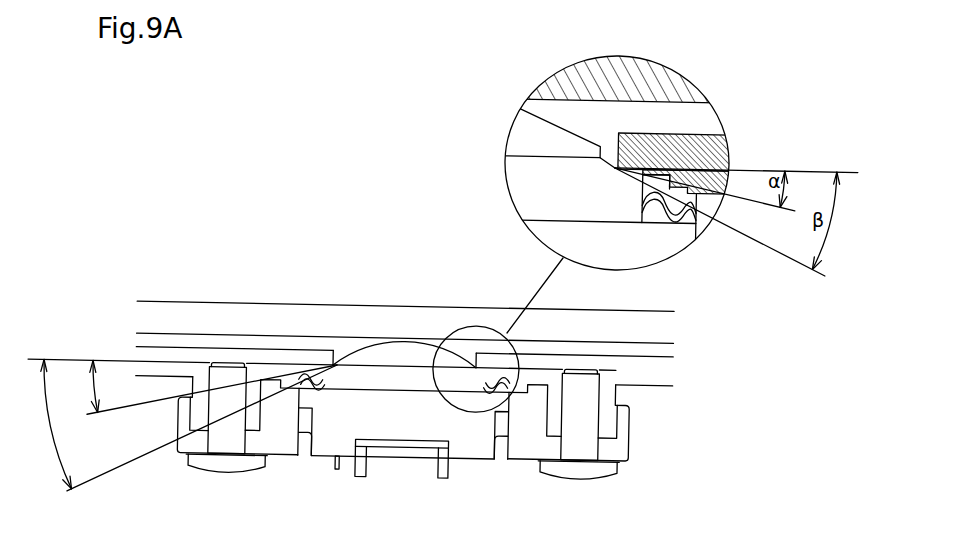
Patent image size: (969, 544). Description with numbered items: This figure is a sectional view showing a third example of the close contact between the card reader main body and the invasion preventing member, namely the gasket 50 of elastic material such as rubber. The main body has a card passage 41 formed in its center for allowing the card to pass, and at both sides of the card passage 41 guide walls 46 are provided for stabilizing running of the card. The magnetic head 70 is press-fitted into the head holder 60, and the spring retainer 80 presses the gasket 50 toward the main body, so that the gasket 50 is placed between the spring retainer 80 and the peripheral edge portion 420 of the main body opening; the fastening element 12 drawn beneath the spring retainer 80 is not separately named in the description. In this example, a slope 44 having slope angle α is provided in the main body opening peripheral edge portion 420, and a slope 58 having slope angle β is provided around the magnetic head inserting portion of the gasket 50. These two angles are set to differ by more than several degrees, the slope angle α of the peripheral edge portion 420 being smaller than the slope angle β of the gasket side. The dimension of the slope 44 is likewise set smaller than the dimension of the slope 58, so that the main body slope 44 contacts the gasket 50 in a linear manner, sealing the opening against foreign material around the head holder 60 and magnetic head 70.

The bolt and nut 12 is at (607, 478).
The card passage 41 is at (283, 338).
The slope 44 is at (622, 158).
The guide wall 46 is at (180, 358).
The gasket 50 is at (361, 377).
The slope 58 is at (614, 169).
The head holder 60 is at (466, 446).
The magnetic head 70 is at (399, 350).
The spring retainer 80 is at (624, 440).
The peripheral edge portion 420 is at (664, 160).